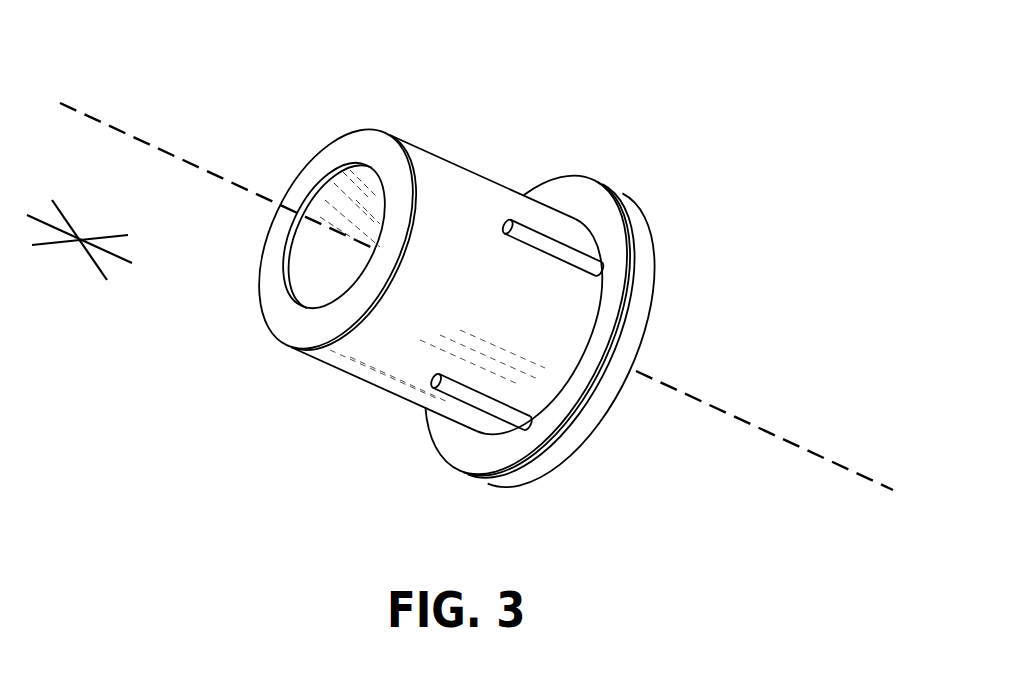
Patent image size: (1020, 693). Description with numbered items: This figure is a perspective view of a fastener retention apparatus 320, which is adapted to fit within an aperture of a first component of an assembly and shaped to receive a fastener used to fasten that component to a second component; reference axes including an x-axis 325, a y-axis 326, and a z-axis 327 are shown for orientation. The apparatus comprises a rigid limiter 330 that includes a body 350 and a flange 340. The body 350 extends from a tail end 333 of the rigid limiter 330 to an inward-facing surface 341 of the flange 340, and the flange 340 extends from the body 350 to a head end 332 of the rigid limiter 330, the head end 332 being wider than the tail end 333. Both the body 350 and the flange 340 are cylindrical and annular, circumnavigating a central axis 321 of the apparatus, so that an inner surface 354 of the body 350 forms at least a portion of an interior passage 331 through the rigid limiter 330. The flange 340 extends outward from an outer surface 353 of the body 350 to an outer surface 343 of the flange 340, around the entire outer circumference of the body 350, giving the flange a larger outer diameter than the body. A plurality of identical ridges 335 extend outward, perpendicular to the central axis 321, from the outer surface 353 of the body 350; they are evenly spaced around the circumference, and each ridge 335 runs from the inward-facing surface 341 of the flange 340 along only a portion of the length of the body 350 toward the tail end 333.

The fastener retention apparatus 320 is at (195, 38).
The central axis 321 is at (752, 418).
The x-axis 325 is at (60, 207).
The y-axis 326 is at (110, 232).
The z-axis 327 is at (113, 253).
The rigid limiter 330 is at (518, 192).
The interior passage 331 is at (330, 247).
The head end 332 is at (606, 460).
The tail end 333 is at (320, 118).
The ridges 335 is at (455, 376).
The flange 340 is at (571, 313).
The inward-facing surface 341 is at (577, 197).
The outer surface of the flange 343 is at (636, 299).
The body 350 is at (386, 133).
The outer surface of the body 353 is at (485, 292).
The inner surface of the body 354 is at (333, 282).